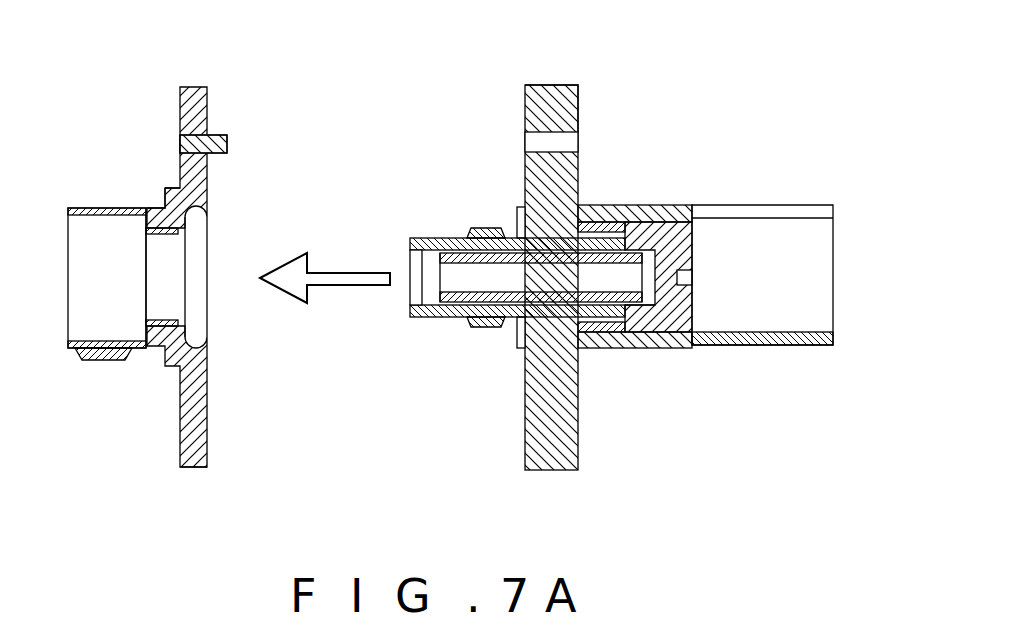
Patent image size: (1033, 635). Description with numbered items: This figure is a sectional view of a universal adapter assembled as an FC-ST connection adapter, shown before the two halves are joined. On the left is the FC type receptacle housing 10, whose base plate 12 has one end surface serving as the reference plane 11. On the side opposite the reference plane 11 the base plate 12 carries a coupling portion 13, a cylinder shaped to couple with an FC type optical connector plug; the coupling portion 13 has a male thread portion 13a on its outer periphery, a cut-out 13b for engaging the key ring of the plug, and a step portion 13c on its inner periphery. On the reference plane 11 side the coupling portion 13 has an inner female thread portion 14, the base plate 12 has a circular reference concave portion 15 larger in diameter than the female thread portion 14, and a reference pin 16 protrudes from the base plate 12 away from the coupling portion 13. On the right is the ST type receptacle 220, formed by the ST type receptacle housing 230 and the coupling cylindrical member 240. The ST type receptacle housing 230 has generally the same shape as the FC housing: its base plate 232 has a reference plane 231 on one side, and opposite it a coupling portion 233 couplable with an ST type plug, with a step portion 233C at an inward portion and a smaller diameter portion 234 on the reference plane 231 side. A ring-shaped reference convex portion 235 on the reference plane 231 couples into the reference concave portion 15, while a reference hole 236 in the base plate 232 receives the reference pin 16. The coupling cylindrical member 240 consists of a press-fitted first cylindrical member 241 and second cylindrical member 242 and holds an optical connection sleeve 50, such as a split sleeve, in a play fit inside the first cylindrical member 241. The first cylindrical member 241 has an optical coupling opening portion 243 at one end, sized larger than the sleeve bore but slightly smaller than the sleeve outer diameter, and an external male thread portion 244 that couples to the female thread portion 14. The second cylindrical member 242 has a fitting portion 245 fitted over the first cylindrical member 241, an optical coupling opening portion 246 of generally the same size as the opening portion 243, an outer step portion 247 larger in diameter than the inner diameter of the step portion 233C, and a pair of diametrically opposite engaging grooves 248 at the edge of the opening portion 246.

The FC type receptacle housing 10 is at (114, 94).
The reference plane 11 is at (210, 420).
The base plate 12 is at (192, 458).
The coupling portion 13 is at (70, 349).
The male thread portion 13a is at (105, 360).
The cut-out 13b is at (90, 208).
The step portion 13c is at (150, 326).
The female thread portion 14 is at (186, 316).
The reference concave portion 15 is at (207, 212).
The reference pin 16 is at (216, 136).
The ST type receptacle 220 is at (446, 106).
The ST type receptacle housing 230 is at (638, 186).
The reference plane 231 is at (535, 466).
The base plate 232 is at (557, 100).
The coupling portion 233 is at (787, 343).
The step portion 233C is at (636, 333).
The smaller diameter portion 234 is at (521, 340).
The reference convex portion 235 is at (520, 212).
The reference hole 236 is at (565, 140).
The coupling cylindrical member 240 is at (444, 208).
The first cylindrical member 241 is at (418, 245).
The second cylindrical member 242 is at (700, 230).
The optical coupling opening portion 243 is at (413, 305).
The male thread portion 244 is at (482, 328).
The fitting portion 245 is at (600, 238).
The optical coupling opening portion 246 is at (680, 337).
The step portion 247 is at (678, 335).
The engaging grooves 248 is at (693, 278).
The optical connection sleeve 50 is at (616, 305).